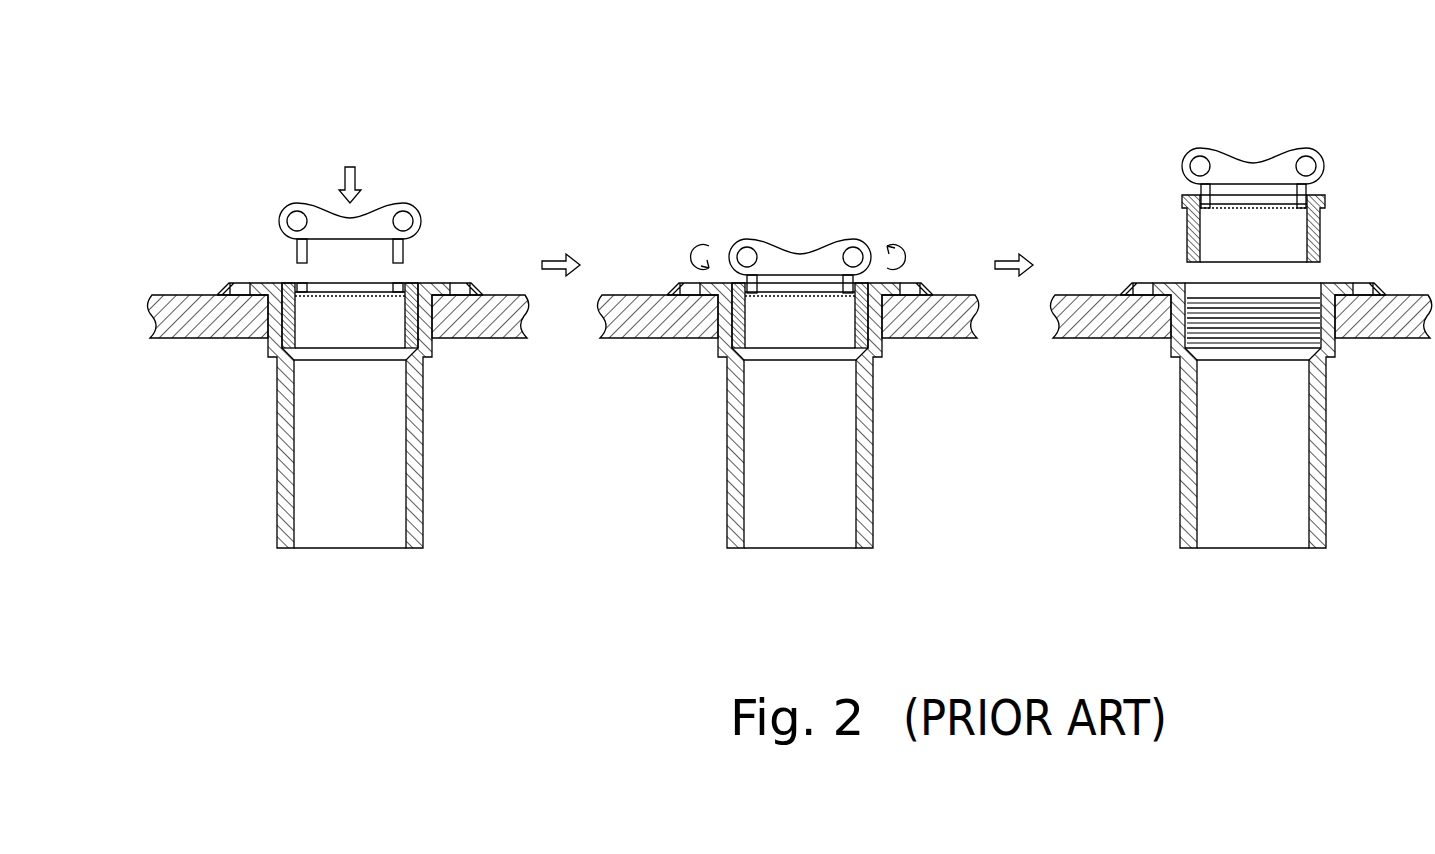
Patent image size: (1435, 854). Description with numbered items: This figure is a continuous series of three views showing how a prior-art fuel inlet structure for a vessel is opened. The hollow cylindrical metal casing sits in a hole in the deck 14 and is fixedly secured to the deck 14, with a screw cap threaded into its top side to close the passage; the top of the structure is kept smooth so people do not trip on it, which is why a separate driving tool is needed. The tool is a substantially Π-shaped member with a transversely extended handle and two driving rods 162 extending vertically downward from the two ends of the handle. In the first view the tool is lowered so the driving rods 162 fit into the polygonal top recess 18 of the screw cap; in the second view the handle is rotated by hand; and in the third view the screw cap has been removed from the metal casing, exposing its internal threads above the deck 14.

The deck 14 is at (475, 340).
The driving rods 162 is at (297, 248).
The polygonal top recess 18 is at (302, 287).